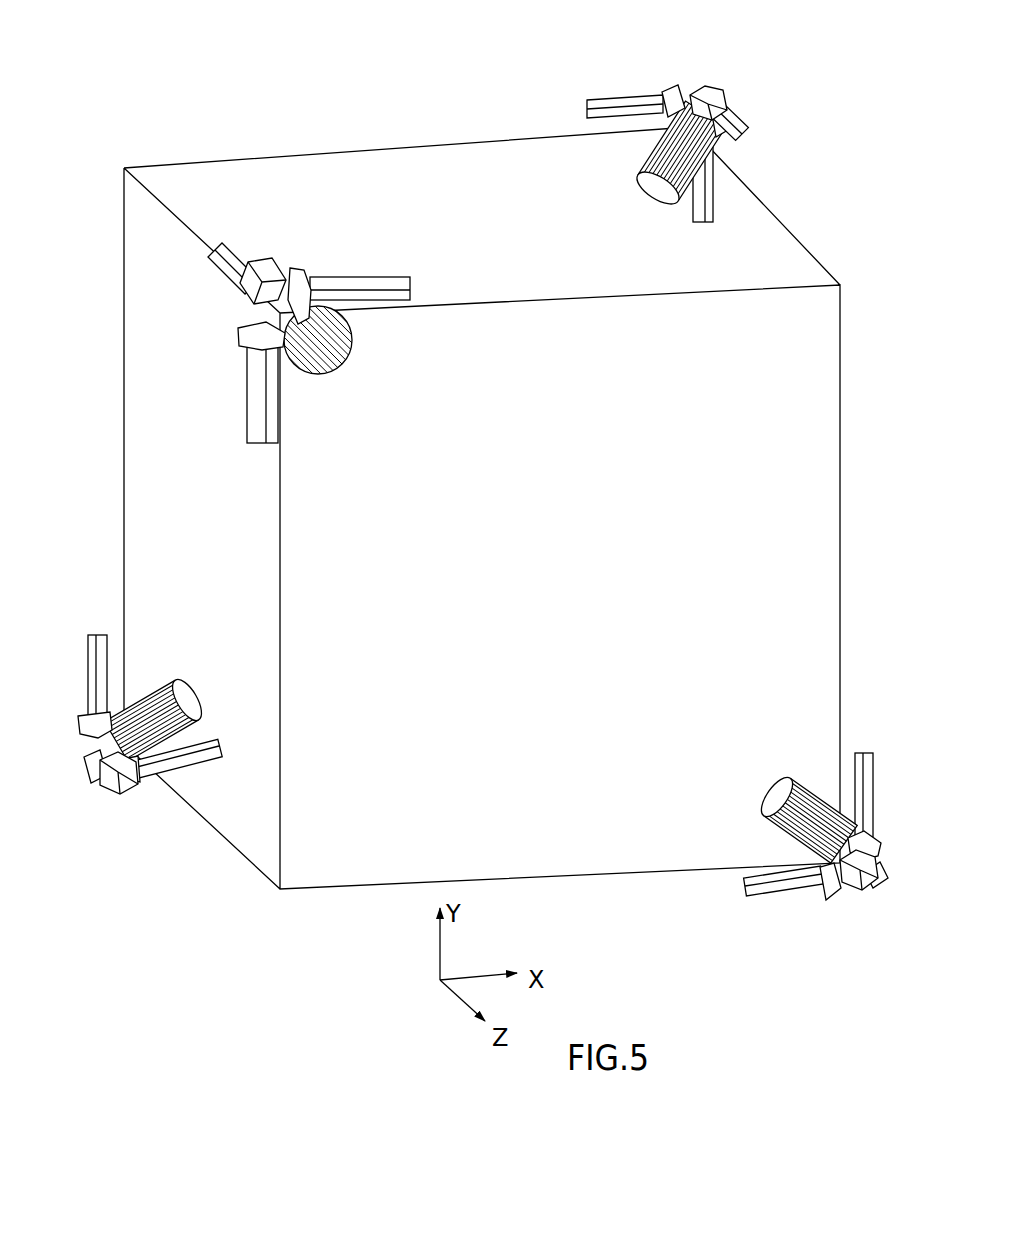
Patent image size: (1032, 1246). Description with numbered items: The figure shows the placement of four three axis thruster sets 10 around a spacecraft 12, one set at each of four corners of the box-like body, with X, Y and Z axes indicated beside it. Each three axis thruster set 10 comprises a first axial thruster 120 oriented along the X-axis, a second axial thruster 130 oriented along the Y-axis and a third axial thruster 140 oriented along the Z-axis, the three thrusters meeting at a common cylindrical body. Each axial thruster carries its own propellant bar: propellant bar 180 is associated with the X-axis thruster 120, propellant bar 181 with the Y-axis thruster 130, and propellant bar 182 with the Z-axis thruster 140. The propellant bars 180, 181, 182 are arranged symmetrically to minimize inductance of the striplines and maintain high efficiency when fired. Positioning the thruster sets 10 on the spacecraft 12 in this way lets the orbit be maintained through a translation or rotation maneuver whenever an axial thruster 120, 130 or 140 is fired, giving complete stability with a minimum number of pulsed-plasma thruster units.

The three axis thruster set 10 is at (301, 256).
The spacecraft 12 is at (362, 160).
The first axial thruster 120 is at (390, 270).
The second axial thruster 130 is at (243, 414).
The third axial thruster 140 is at (241, 249).
The propellant bar 180 is at (335, 275).
The propellant bar 181 is at (247, 358).
The propellant bar 182 is at (738, 107).